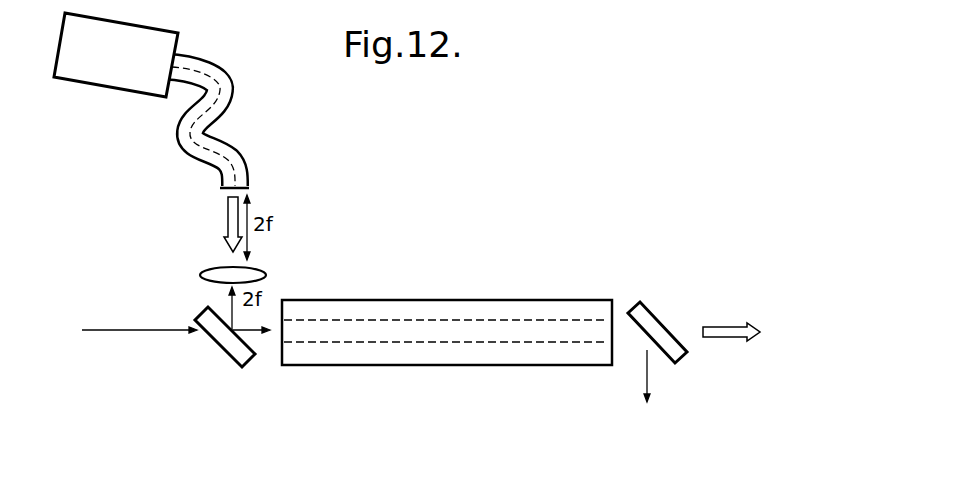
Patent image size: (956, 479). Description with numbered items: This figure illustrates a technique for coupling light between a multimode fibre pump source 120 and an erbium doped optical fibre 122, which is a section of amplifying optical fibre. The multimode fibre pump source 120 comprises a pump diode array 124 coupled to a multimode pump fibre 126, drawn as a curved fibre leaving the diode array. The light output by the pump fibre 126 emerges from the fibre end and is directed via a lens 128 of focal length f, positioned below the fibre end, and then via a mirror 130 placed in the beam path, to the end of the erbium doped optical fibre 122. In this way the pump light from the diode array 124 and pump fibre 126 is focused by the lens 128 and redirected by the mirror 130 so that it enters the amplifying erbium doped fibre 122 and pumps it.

The multimode fibre pump source 120 is at (129, 178).
The erbium doped optical fibre 122 is at (430, 310).
The pump diode array 124 is at (108, 68).
The multimode pump fibre 126 is at (220, 80).
The lens 128 is at (250, 273).
The mirror 130 is at (232, 342).